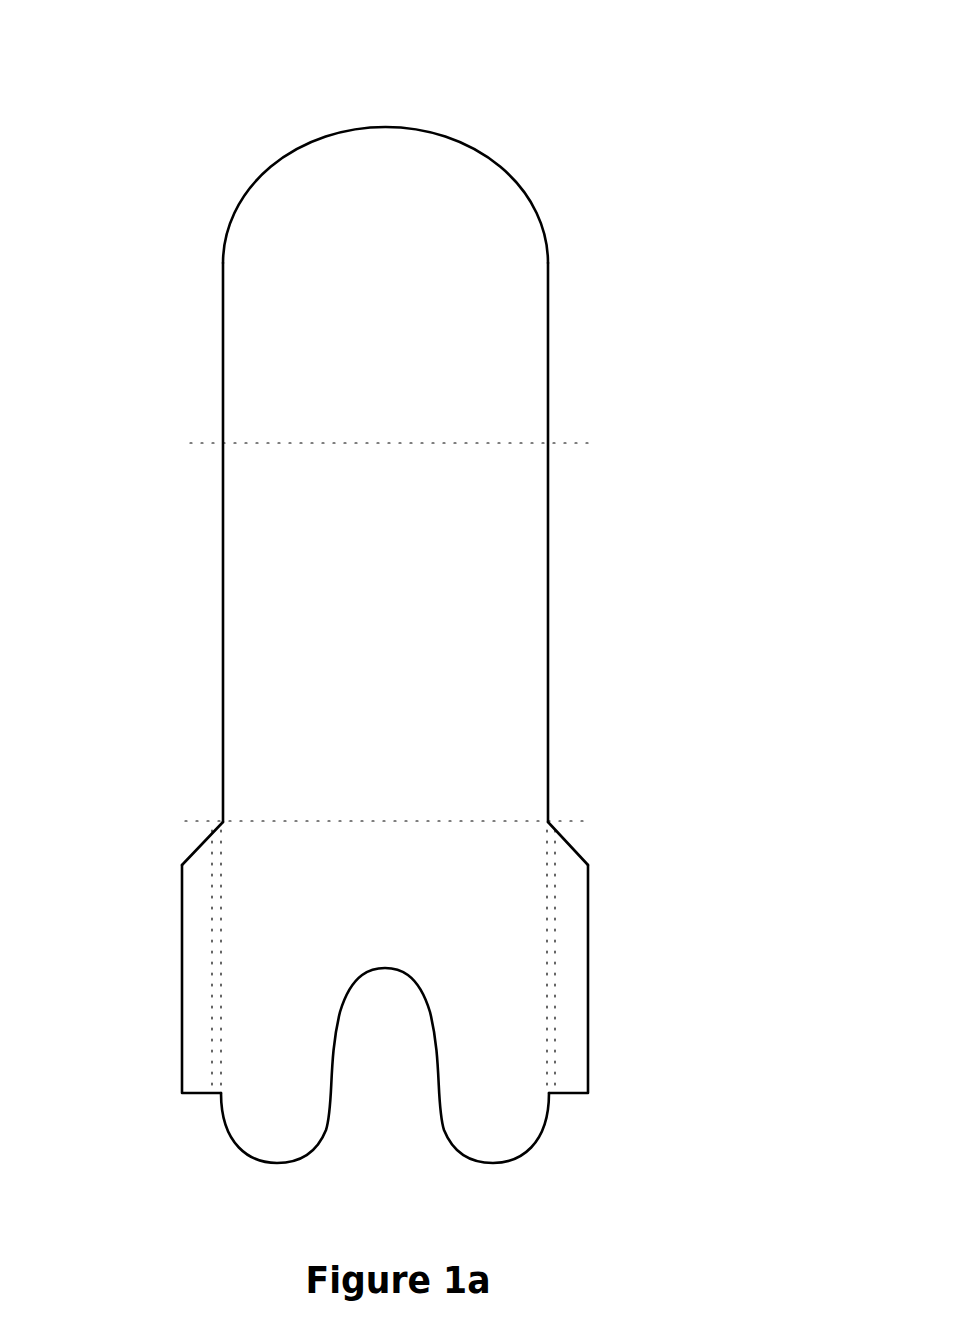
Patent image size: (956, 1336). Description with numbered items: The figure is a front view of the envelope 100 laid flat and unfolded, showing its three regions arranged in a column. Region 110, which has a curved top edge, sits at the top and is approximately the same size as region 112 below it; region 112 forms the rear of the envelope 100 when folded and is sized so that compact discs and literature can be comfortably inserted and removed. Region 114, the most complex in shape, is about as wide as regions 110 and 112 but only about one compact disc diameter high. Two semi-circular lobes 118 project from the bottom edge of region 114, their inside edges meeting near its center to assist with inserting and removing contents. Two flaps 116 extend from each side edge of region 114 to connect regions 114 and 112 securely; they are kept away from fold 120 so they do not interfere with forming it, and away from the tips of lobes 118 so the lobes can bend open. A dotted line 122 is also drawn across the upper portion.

The envelope 100 is at (496, 129).
The region 110 is at (252, 324).
The region 112 is at (533, 603).
The region 114 is at (520, 860).
The flaps 116 is at (195, 930).
The lobes 118 is at (283, 1110).
The fold 120 is at (207, 820).
The fold line 122 is at (560, 443).